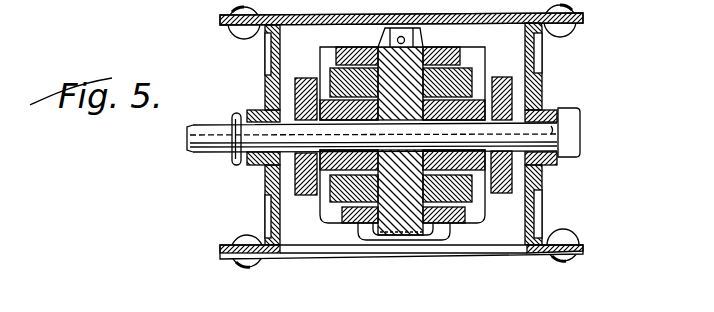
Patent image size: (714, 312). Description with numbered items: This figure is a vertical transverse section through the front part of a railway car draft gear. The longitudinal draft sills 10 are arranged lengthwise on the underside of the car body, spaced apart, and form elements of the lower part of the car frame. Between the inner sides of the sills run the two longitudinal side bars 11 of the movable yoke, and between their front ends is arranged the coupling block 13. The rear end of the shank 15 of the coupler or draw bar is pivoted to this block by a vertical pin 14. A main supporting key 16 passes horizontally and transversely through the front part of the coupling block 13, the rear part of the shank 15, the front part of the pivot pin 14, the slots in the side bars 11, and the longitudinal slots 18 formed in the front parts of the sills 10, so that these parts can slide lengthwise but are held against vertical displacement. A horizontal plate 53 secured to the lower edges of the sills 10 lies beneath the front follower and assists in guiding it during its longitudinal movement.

The longitudinal draft sill 10 is at (270, 58).
The yoke side bar 11 is at (303, 197).
The coupling block 13 is at (472, 68).
The vertical pin 14 is at (405, 232).
The shank 15 is at (327, 98).
The main supporting key 16 is at (580, 133).
The longitudinal slot 18 is at (268, 163).
The horizontal plate 53 is at (497, 253).